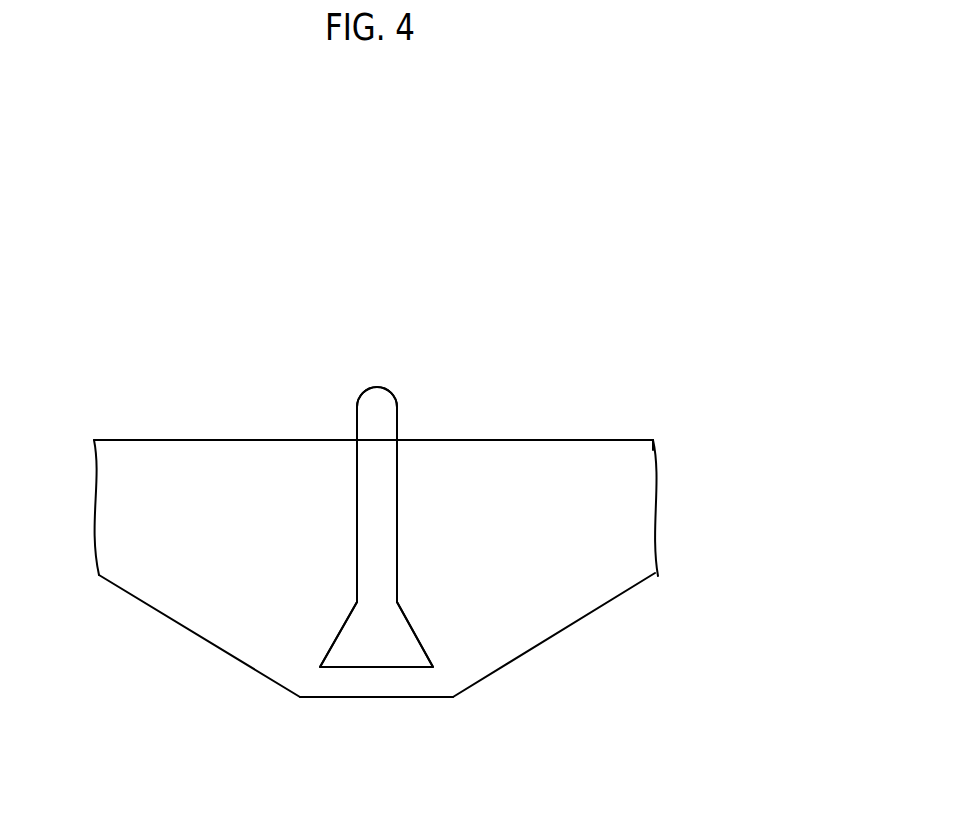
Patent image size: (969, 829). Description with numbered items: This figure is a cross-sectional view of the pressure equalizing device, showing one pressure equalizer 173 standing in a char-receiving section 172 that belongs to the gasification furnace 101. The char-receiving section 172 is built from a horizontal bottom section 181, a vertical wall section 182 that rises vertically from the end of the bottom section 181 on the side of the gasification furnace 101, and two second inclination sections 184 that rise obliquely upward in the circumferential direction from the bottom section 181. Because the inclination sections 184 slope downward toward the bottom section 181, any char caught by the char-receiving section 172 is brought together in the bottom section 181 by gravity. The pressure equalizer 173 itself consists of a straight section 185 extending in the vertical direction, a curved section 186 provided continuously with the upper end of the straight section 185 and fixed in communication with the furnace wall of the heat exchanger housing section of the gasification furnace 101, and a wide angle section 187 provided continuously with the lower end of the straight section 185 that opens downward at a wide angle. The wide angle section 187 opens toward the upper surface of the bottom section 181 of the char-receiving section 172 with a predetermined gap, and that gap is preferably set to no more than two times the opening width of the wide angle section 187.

The gasification furnace 101 is at (535, 372).
The char-receiving section 172 is at (609, 440).
The vertical wall section 182 is at (453, 455).
The pressure equalizer 173 is at (357, 468).
The curved section 186 is at (377, 403).
The straight section 185 is at (388, 525).
The wide angle section 187 is at (362, 655).
The bottom section 181 is at (415, 688).
The second inclination section 184 is at (175, 617).